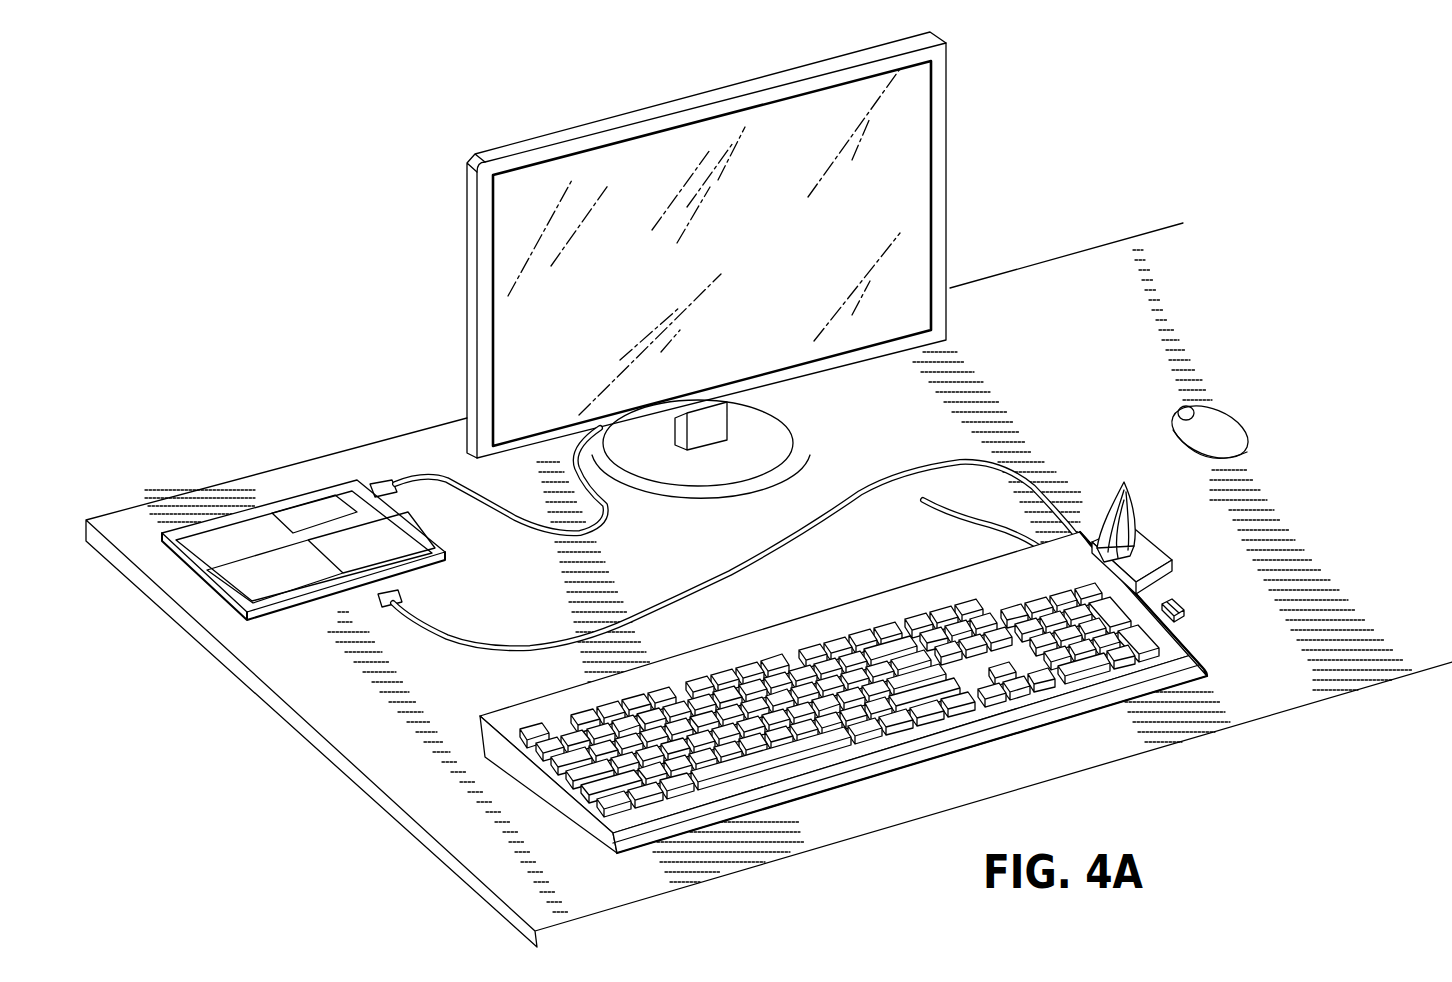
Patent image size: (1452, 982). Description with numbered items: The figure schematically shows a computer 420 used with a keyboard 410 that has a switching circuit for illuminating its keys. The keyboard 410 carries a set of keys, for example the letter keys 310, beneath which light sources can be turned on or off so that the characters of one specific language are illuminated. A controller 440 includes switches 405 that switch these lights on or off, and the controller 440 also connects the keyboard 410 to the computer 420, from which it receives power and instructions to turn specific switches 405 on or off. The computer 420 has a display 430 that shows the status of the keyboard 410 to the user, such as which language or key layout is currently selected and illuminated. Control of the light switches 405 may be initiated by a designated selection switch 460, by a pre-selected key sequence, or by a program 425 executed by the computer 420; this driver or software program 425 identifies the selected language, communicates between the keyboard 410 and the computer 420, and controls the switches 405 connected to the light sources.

The letter keys 310 is at (848, 705).
The switches 405 is at (1127, 478).
The keyboard 410 is at (1125, 680).
The computer 420 is at (230, 531).
The program 425 is at (313, 512).
The display 430 is at (533, 157).
The controller 440 is at (1157, 547).
The selection switch 460 is at (1184, 612).